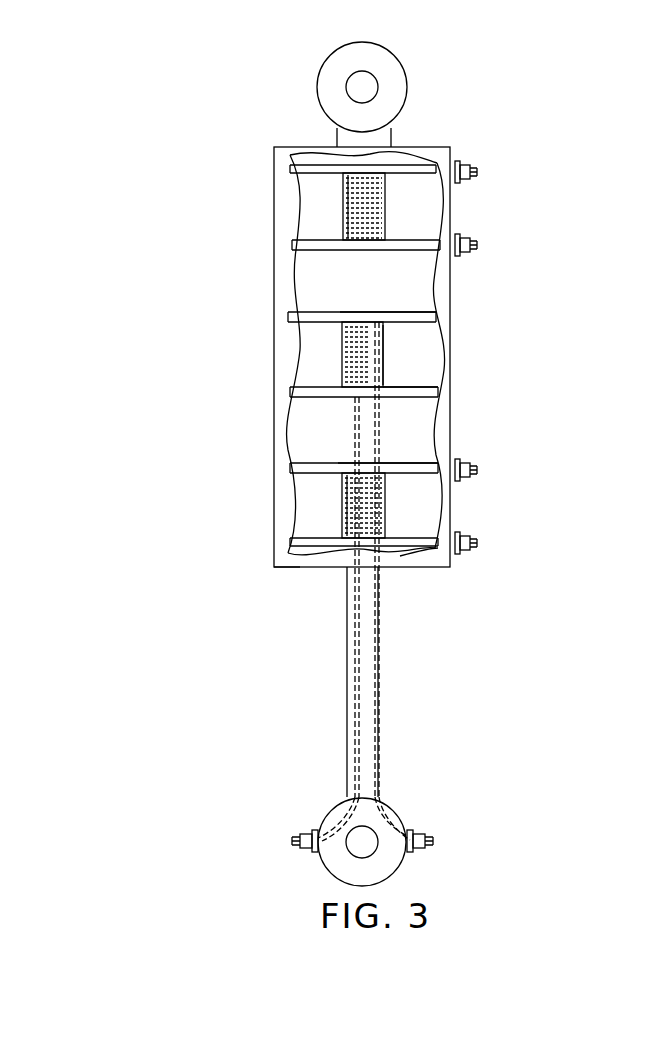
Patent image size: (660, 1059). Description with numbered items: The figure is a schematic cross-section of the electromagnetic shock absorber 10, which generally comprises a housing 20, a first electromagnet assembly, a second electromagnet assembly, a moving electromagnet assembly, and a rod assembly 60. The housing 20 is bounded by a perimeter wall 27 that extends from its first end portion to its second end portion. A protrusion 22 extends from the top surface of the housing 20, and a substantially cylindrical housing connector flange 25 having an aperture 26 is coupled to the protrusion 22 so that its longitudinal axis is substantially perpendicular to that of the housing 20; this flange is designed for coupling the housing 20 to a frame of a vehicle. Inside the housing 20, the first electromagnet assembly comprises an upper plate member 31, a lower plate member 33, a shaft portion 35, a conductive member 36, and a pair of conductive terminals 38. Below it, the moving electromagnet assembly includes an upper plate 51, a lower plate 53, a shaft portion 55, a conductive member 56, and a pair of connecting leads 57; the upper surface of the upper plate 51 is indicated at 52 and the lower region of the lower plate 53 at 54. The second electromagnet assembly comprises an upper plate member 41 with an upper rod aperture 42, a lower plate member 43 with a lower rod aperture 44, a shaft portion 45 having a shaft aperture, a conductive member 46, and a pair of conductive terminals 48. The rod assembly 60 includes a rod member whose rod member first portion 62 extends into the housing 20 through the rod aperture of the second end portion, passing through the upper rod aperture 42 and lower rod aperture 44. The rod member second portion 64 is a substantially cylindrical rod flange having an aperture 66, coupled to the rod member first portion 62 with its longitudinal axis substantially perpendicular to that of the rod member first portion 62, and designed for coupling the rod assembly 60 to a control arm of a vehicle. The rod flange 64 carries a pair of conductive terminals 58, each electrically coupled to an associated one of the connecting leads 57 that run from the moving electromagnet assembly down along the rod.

The electromagnetic shock absorber 10 is at (198, 338).
The housing 20 is at (273, 296).
The protrusion 22 is at (337, 129).
The housing connector flange 25 is at (405, 103).
The aperture 26 is at (368, 88).
The perimeter wall 27 is at (278, 557).
The upper plate member 31 is at (320, 170).
The lower plate member 33 is at (315, 248).
The shaft portion 35 is at (387, 208).
The conductive member 36 is at (345, 205).
The conductive terminals 38 is at (478, 175).
The upper plate member 41 is at (303, 463).
The upper rod aperture 42 is at (340, 462).
The lower plate member 43 is at (425, 547).
The lower rod aperture 44 is at (393, 535).
The shaft portion 45 is at (387, 493).
The conductive member 46 is at (343, 513).
The conductive terminals 48 is at (477, 470).
The upper plate 51 is at (420, 313).
The plate upper surface 52 is at (385, 310).
The lower plate 53 is at (404, 393).
The plate lower surface 54 is at (400, 400).
The shaft portion 55 is at (388, 343).
The conductive member 56 is at (383, 370).
The connecting leads 57 is at (371, 757).
The conductive terminals 58 is at (435, 838).
The rod assembly 60 is at (330, 785).
The rod member first portion 62 is at (383, 403).
The rod member second portion 64 is at (395, 873).
The aperture 66 is at (355, 852).